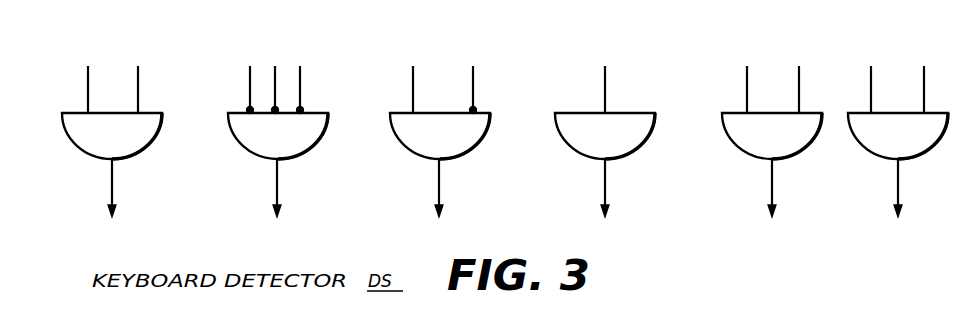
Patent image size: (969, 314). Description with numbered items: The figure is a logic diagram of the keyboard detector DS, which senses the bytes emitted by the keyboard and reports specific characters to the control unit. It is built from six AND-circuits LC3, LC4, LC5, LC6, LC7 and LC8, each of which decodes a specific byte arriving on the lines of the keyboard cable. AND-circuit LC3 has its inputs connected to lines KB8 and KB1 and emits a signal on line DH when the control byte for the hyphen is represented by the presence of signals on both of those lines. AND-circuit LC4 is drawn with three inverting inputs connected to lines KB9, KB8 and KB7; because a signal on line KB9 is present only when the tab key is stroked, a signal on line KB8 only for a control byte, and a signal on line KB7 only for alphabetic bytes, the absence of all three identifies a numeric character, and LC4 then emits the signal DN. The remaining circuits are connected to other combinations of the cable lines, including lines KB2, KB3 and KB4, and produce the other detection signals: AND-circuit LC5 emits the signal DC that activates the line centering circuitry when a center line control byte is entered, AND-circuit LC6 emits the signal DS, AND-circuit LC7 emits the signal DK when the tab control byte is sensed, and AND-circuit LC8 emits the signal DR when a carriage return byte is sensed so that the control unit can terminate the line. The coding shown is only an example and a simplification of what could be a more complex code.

The AND-circuit LC3 is at (74, 140).
The AND-circuit LC4 is at (246, 148).
The AND-circuit LC5 is at (402, 142).
The AND-circuit LC6 is at (568, 144).
The AND-circuit LC7 is at (738, 148).
The AND-circuit LC8 is at (876, 150).
The line KB8 is at (88, 84).
The line KB1 is at (138, 84).
The line KB9 is at (250, 80).
The line KB7 is at (298, 76).
The line KB2 is at (473, 82).
The line KB3 is at (799, 82).
The line KB4 is at (924, 82).
The line DH is at (112, 183).
The line DN is at (277, 183).
The line DC is at (439, 181).
The keyboard detector DS is at (605, 184).
The line DK is at (772, 186).
The line DR is at (898, 184).